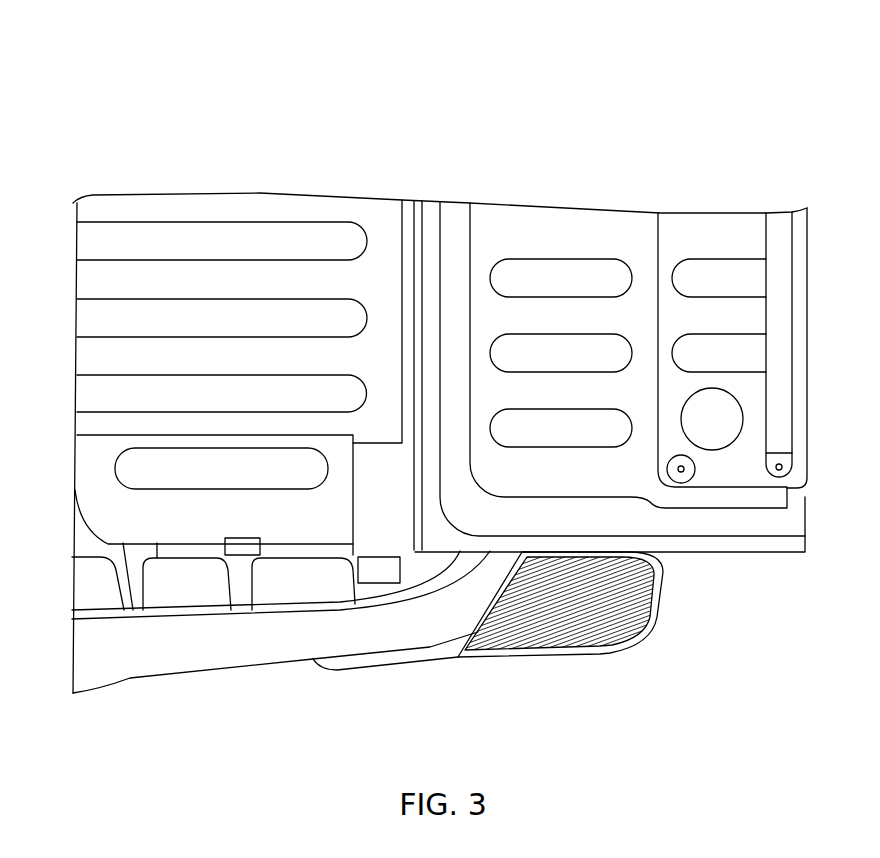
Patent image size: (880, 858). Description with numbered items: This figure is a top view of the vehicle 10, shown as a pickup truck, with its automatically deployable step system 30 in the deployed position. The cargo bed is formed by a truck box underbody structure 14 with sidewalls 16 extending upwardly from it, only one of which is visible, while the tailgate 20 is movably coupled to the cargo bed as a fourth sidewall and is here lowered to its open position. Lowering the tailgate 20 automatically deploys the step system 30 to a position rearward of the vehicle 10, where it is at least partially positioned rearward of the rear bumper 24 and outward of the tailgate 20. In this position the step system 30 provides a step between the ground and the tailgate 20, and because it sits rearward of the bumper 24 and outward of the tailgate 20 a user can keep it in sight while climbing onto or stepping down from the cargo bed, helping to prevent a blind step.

The vehicle 10 is at (740, 81).
The truck box underbody structure 14 is at (227, 240).
The sidewalls 16 is at (175, 583).
The tailgate 20 is at (779, 283).
The rear bumper 24 is at (433, 648).
The step system 30 is at (588, 680).